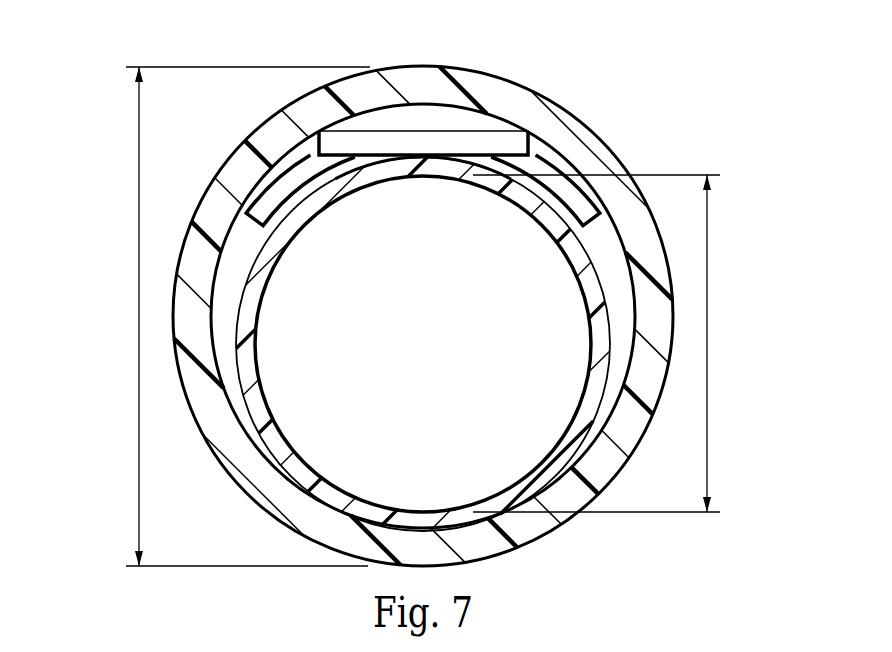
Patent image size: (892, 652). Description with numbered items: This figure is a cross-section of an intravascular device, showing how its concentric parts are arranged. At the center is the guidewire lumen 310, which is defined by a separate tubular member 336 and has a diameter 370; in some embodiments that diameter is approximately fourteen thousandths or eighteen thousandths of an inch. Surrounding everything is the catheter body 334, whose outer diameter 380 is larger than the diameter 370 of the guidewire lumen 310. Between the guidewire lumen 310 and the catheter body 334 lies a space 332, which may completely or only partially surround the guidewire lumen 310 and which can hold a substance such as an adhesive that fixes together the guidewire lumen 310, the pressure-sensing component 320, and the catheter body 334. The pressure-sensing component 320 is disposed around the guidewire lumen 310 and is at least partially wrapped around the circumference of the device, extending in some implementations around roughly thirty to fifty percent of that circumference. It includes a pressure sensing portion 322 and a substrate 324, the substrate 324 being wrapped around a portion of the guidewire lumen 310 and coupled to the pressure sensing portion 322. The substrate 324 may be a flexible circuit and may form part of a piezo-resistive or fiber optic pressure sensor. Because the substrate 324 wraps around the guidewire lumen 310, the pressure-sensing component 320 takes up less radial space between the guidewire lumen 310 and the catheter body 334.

The guidewire lumen 310 is at (448, 361).
The pressure-sensing component 320 is at (423, 108).
The pressure sensing portion 322 is at (490, 142).
The substrate 324 is at (533, 167).
The space 332 is at (240, 243).
The catheter body 334 is at (537, 533).
The tubular member 336 is at (300, 473).
The diameter 370 is at (707, 343).
The outer diameter 380 is at (139, 317).